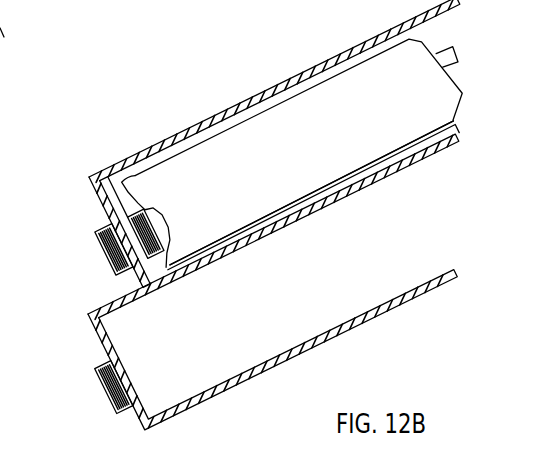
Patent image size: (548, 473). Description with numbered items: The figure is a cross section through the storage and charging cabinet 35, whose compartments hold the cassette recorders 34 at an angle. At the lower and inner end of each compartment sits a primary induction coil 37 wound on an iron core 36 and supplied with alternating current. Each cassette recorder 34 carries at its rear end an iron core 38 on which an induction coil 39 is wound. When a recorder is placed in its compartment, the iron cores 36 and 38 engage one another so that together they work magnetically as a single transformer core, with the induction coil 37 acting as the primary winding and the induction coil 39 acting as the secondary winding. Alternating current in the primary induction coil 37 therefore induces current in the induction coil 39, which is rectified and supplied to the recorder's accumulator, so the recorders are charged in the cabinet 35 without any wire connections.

The cassette recorder 34 is at (422, 93).
The storage and charging cabinet 35 is at (341, 197).
The iron core 36 is at (100, 251).
The primary induction coil 37 is at (105, 231).
The iron core 38 is at (144, 212).
The induction coil 39 is at (105, 173).